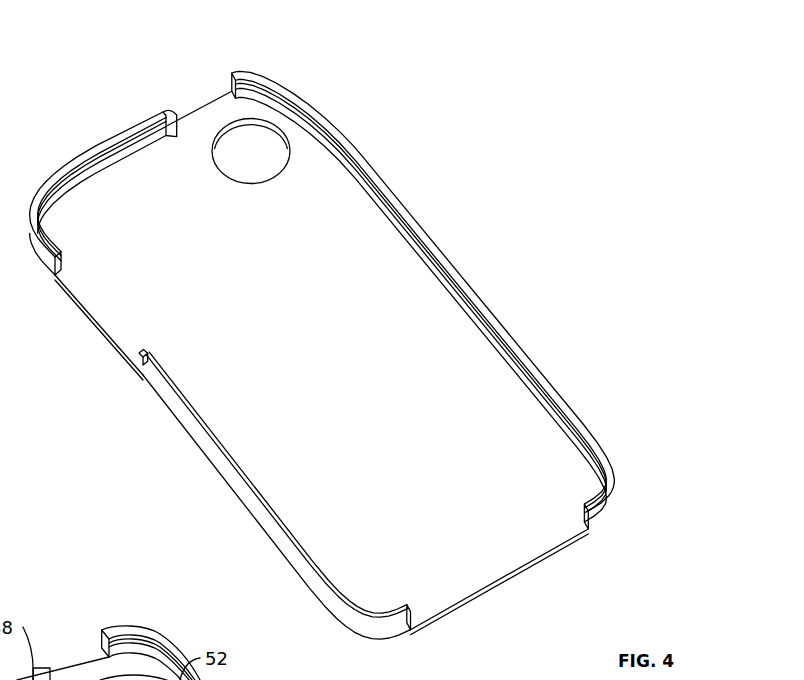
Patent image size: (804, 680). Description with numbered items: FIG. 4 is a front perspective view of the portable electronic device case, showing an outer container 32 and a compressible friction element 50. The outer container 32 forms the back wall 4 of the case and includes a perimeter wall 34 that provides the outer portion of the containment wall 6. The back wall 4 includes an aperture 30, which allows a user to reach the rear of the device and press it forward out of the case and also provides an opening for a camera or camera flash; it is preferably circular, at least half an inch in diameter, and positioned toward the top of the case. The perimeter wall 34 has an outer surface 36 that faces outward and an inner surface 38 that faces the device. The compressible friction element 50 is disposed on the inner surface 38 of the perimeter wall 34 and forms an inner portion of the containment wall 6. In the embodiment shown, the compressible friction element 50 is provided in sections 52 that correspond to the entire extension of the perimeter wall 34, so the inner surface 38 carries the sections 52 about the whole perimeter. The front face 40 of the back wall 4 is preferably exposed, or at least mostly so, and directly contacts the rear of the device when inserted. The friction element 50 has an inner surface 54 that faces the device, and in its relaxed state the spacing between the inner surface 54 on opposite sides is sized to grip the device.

The back wall 4 is at (468, 562).
The containment wall 6 is at (628, 461).
The aperture 30 is at (260, 126).
The outer container 32 is at (546, 547).
The perimeter wall 34 is at (532, 373).
The outer surface 36 is at (223, 472).
The inner surface 38 is at (497, 345).
The front face 40 is at (210, 350).
The compressible friction element 50 is at (523, 387).
The sections 52 is at (162, 137).
The inner surface 54 is at (397, 240).